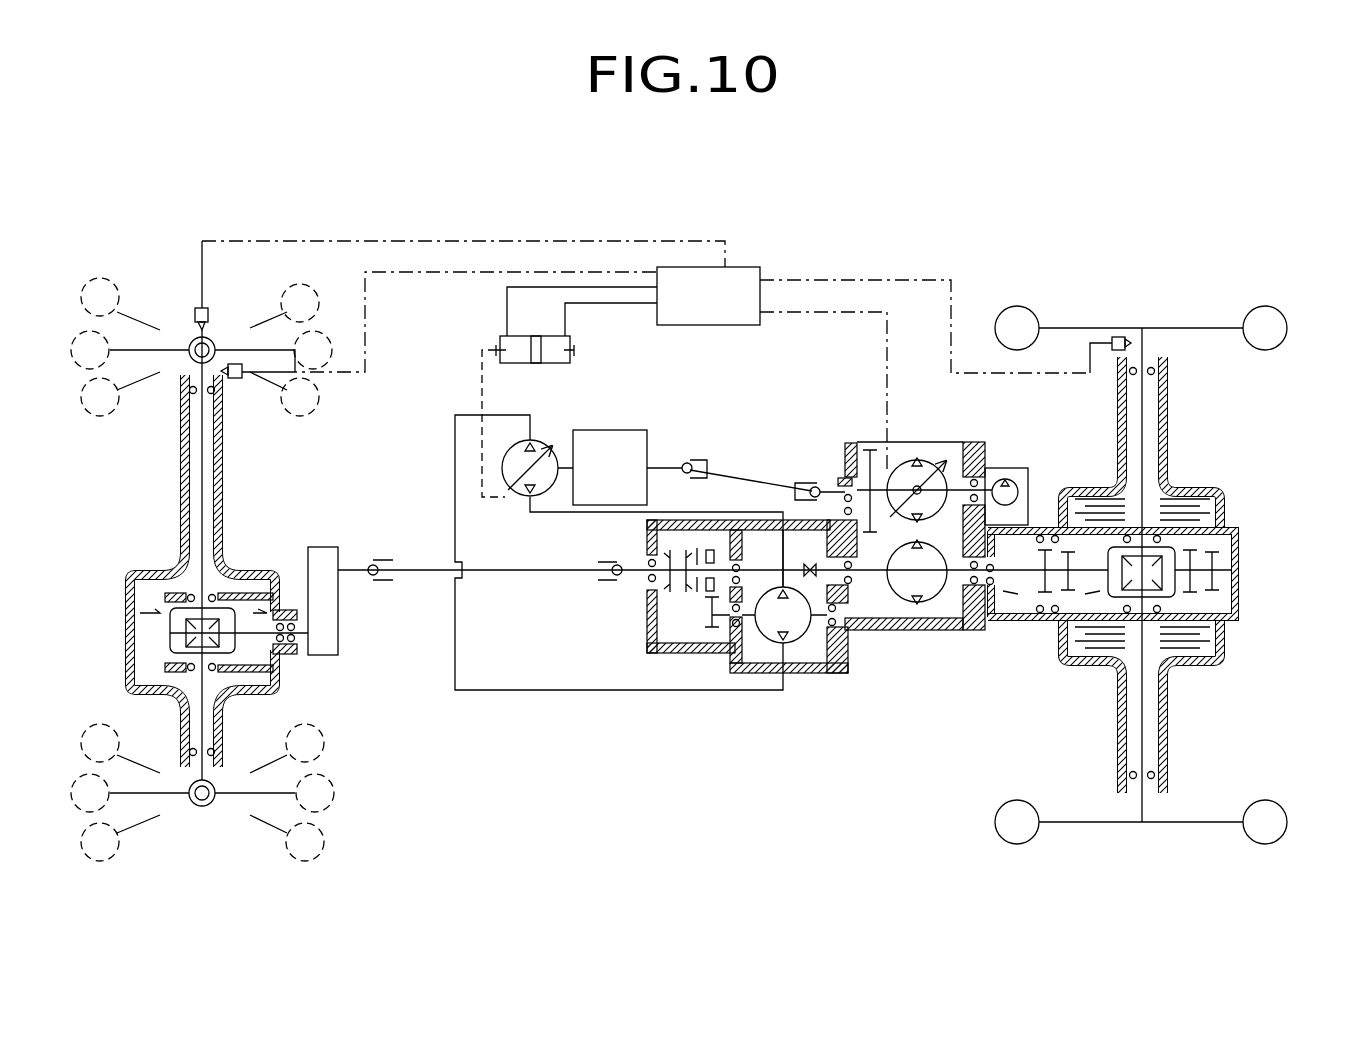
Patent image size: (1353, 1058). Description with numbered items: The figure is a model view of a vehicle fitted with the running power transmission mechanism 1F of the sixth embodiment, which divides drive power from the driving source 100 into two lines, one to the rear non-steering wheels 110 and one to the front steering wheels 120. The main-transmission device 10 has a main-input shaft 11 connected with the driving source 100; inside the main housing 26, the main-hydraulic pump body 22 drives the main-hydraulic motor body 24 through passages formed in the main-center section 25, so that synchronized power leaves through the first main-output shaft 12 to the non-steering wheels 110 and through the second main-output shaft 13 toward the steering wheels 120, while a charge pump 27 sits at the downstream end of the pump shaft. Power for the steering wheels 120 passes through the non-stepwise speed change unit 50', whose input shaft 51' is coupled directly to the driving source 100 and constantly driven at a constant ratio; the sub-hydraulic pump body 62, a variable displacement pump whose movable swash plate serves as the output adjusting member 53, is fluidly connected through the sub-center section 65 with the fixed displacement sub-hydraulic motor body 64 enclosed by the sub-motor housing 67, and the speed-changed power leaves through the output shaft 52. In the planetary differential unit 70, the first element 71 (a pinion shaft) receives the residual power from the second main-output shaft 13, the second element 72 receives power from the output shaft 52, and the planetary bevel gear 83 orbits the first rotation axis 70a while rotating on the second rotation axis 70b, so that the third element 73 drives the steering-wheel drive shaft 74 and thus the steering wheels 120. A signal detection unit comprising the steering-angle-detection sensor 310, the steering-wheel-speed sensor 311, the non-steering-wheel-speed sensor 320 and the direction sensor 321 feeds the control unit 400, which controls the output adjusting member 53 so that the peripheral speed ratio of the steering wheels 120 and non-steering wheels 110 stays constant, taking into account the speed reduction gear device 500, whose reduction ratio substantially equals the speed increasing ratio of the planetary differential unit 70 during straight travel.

The running power transmission mechanism 1F is at (912, 192).
The control unit 400 is at (740, 270).
The steering wheels 120 is at (318, 285).
The steering-angle-detection sensor 310 is at (195, 312).
The steering-wheel-speed sensor 311 is at (236, 378).
The non-steering-wheel-speed sensor 320 is at (1118, 337).
The direction sensor 321 is at (927, 484).
The non-steering wheels 110 is at (1268, 318).
The input shaft 51' is at (477, 390).
The output adjusting member 53 is at (503, 460).
The driving source 100 is at (608, 430).
The first element 71 is at (672, 548).
The second element 72 is at (720, 548).
The planetary bevel gear 83 is at (675, 525).
The first rotation axis 70a is at (738, 530).
The second rotation axis 70b is at (690, 603).
The main-input shaft 11 is at (850, 443).
The main-transmission device 10 is at (913, 430).
The main-hydraulic pump body 22 is at (935, 457).
The charge pump 27 is at (1020, 468).
The third element 73 is at (652, 562).
The steering-wheel drive shaft 74 is at (630, 575).
The sub-hydraulic pump body 62 is at (513, 510).
The planetary differential unit 70 is at (633, 640).
The output shaft 52 is at (733, 667).
The sub-motor housing 67 is at (770, 667).
The sub-hydraulic motor body 64 is at (810, 667).
The sub-center section 65 is at (840, 665).
The non-stepwise speed change unit 50' is at (873, 717).
The main housing 26 is at (870, 633).
The second main-output shaft 13 is at (878, 585).
The first main-output shaft 12 is at (952, 580).
The main-hydraulic motor body 24 is at (918, 605).
The main-center section 25 is at (990, 628).
The speed reduction gear device 500 is at (325, 648).